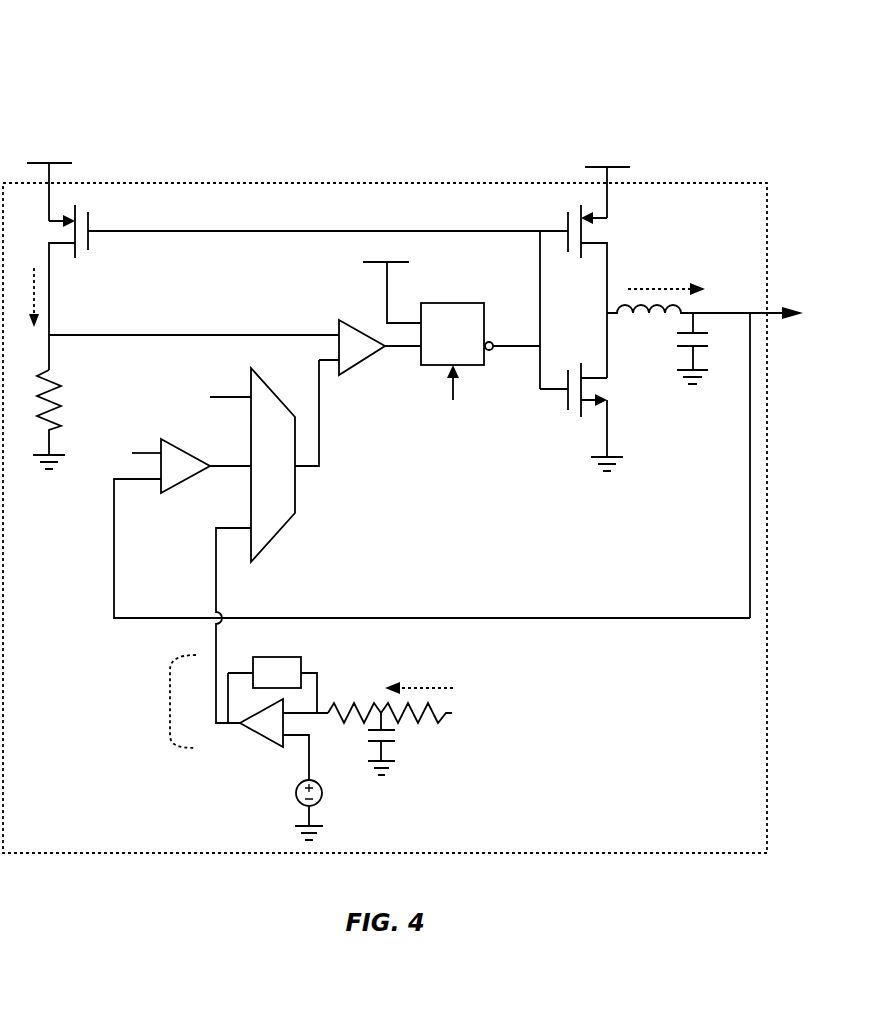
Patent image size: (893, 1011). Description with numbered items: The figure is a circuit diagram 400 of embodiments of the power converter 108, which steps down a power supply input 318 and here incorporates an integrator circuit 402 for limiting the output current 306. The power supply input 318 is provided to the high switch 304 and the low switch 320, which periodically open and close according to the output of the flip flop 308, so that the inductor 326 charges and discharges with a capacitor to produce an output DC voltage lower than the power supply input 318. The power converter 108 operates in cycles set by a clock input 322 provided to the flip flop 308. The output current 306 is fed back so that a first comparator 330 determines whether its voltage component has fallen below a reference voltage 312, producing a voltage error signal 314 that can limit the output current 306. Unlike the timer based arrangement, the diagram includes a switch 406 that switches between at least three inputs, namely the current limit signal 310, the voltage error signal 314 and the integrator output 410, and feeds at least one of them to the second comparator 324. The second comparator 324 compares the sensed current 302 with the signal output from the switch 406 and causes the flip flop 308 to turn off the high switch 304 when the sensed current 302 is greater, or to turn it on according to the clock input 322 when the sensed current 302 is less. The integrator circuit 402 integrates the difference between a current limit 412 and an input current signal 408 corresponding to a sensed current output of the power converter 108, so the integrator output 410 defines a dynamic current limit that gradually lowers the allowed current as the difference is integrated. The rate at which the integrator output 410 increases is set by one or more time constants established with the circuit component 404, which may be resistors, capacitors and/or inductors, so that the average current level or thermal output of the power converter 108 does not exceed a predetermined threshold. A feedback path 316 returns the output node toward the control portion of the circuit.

The circuit diagram 400 is at (124, 84).
The power converter 108 is at (455, 183).
The sensed current 302 is at (33, 268).
The high switch 304 is at (568, 222).
The output current 306 is at (656, 289).
The flip flop 308 is at (480, 334).
The current limit signal 310 is at (228, 397).
The reference voltage 312 is at (134, 453).
The voltage error signal 314 is at (221, 466).
The feedback line 316 is at (366, 618).
The power supply input 318 is at (37, 163).
The low switch 320 is at (568, 402).
The clock input 322 is at (452, 396).
The second comparator 324 is at (340, 320).
The inductor 326 is at (652, 315).
The first comparator 330 is at (165, 440).
The integrator circuit 402 is at (170, 706).
The circuit component 404 is at (272, 690).
The switch 406 is at (273, 465).
The input current signal 408 is at (436, 688).
The integrator output 410 is at (216, 560).
The current limit 412 is at (309, 758).